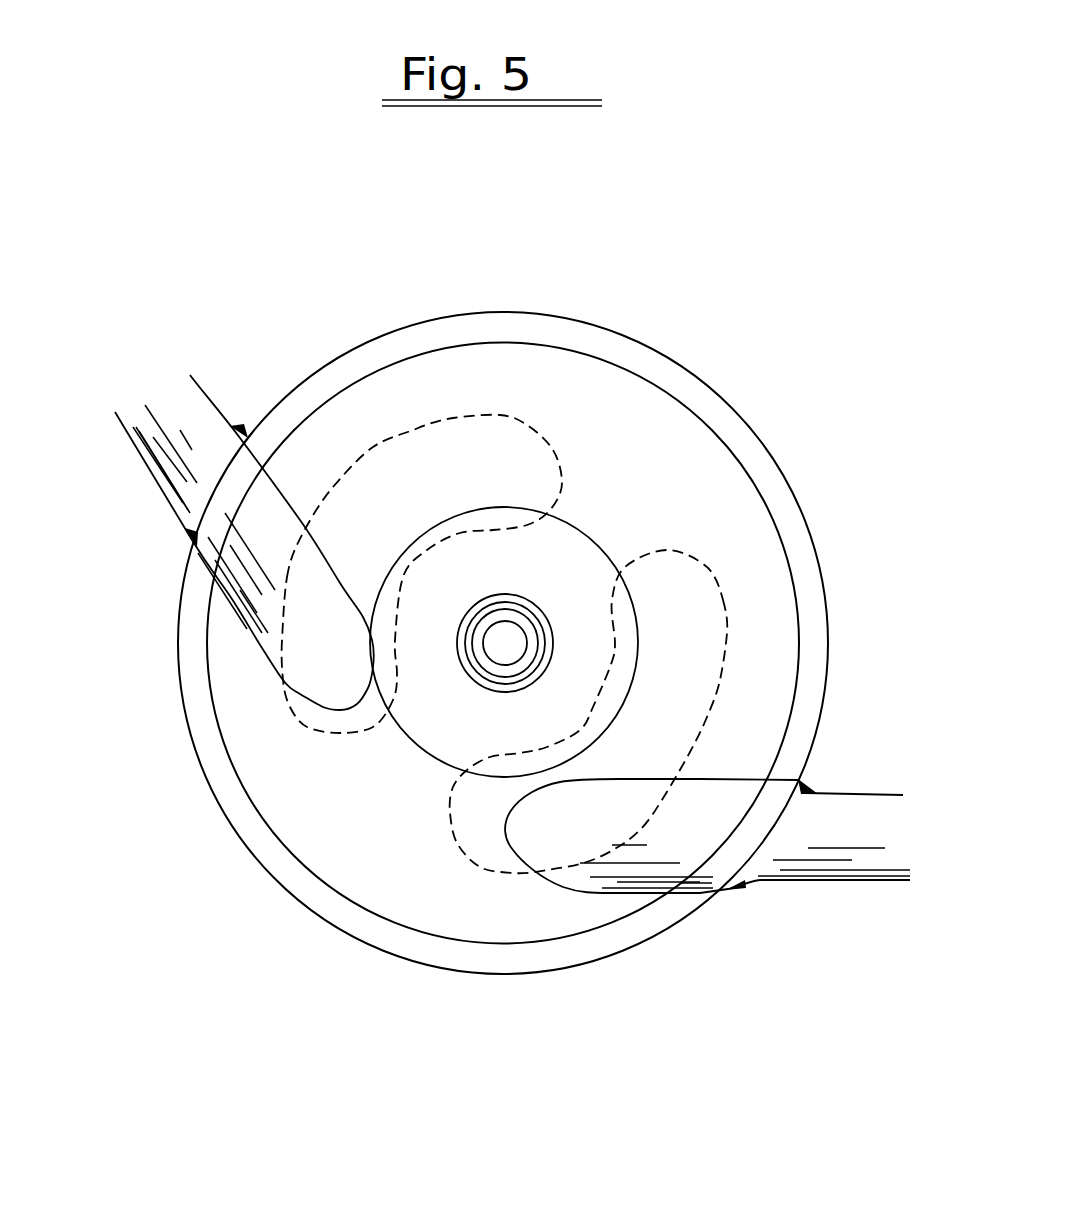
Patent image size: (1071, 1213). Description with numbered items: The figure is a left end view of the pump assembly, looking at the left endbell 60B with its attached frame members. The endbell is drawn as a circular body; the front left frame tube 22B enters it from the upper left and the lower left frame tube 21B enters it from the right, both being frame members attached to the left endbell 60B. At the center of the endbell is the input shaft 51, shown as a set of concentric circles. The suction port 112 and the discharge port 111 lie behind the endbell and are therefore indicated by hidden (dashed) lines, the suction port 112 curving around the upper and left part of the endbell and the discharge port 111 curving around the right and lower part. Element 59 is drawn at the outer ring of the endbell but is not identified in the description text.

The housing wall 59 is at (302, 400).
The left endbell 60B is at (732, 518).
The input shaft 51 is at (505, 645).
The suction port 112 is at (490, 460).
The discharge port 111 is at (675, 693).
The front left frame tube 22B is at (210, 455).
The lower left frame tube 21B is at (827, 837).